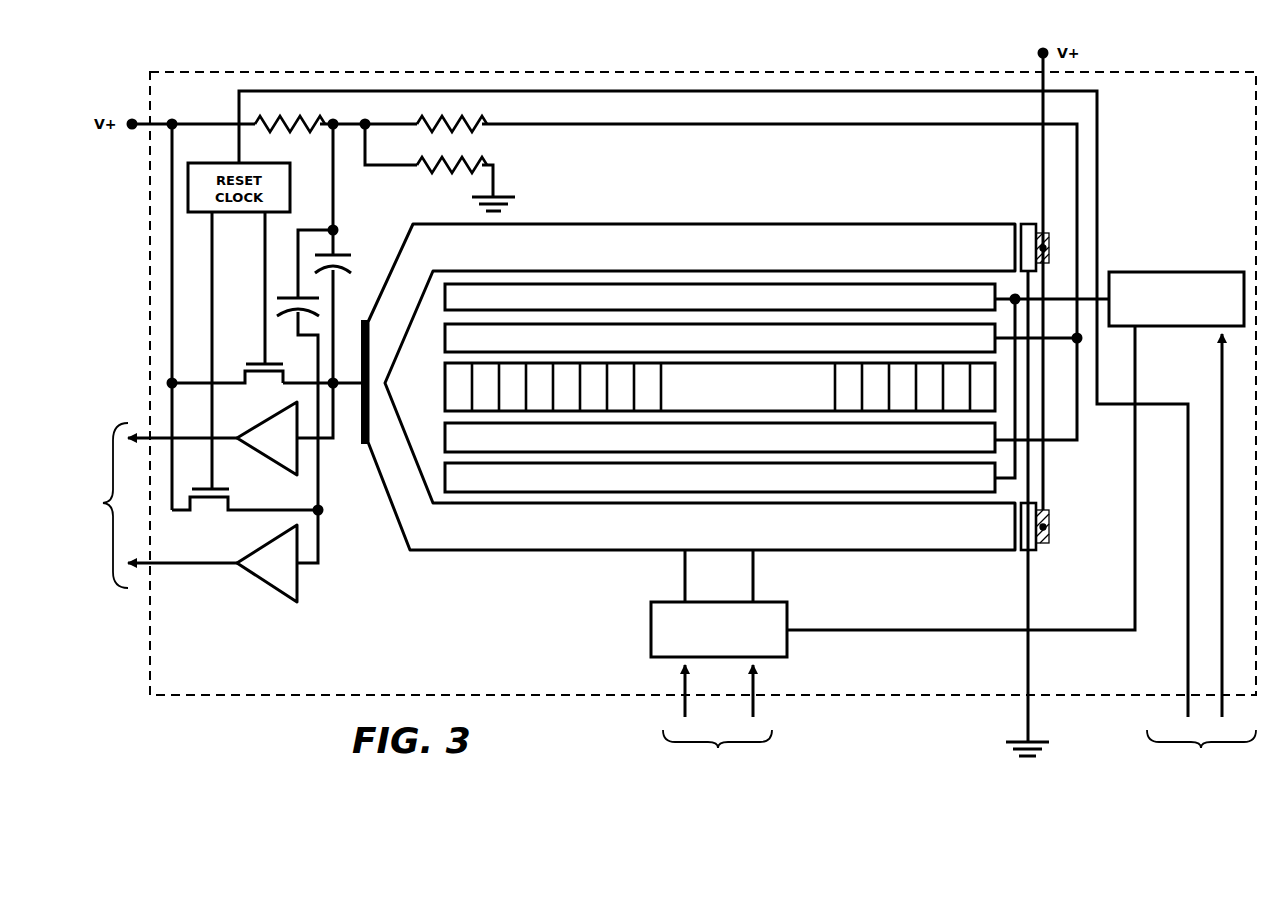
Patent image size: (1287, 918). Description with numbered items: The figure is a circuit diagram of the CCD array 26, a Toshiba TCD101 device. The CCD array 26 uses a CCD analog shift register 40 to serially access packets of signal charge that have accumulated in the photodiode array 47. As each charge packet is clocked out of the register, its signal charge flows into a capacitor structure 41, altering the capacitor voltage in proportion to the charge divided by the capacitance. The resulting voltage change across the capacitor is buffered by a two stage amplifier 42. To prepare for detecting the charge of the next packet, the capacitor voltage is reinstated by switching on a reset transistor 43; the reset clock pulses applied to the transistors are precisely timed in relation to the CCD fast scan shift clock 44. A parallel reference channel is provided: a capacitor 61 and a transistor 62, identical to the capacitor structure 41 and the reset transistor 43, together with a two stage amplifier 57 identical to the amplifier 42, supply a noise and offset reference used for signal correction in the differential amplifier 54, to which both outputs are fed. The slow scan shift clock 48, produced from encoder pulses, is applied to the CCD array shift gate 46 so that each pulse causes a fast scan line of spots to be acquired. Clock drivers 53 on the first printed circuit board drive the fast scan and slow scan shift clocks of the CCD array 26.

The CCD array 26 is at (714, 68).
The CCD analog shift register 40 is at (724, 245).
The capacitor structure 41 is at (336, 256).
The two stage amplifier 42 is at (272, 416).
The reset transistor 43 is at (258, 364).
The CCD fast scan shift clock 44 is at (670, 602).
The CCD array shift gate 46 is at (644, 294).
The photodiode array 47 is at (646, 362).
The slow scan shift clock 48 is at (1214, 272).
The clock drivers 53 is at (959, 554).
The differential amplifier 54 is at (94, 505).
The two stage amplifier 57 is at (262, 583).
The capacitor 61 is at (284, 296).
The transistor 62 is at (205, 498).